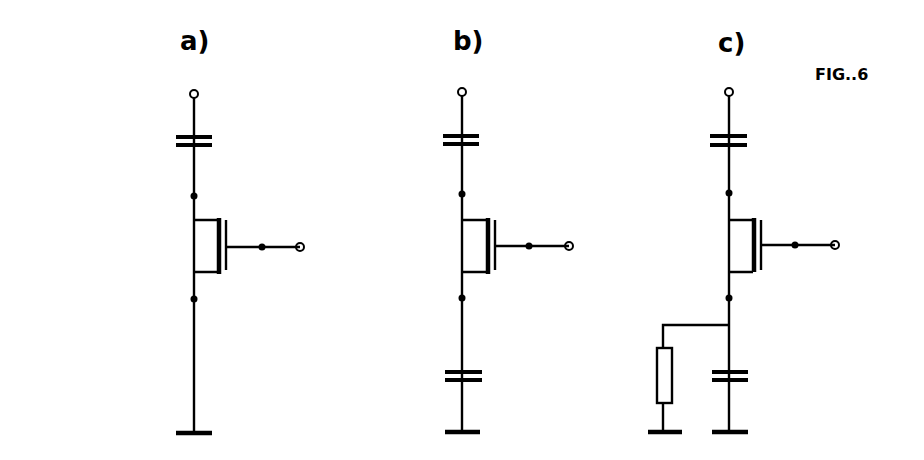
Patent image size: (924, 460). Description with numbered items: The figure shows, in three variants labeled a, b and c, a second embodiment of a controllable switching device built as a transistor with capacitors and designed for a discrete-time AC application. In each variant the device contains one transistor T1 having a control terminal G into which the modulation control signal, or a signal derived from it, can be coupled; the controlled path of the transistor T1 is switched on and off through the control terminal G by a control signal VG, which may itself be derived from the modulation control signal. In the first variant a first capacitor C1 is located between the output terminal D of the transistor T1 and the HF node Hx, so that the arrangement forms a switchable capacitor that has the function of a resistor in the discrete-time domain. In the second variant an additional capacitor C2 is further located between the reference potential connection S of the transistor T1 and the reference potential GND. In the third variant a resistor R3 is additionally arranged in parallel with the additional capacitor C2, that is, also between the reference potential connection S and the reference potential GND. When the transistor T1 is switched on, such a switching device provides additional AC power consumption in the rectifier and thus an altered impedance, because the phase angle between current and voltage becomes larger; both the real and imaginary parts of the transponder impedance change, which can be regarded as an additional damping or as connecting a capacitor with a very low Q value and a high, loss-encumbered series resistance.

The HF node Hx is at (198, 92).
The first capacitor C1 is at (202, 132).
The output terminal D is at (198, 195).
The transistor T1 is at (192, 248).
The control terminal G is at (263, 252).
The control signal VG is at (304, 236).
The reference potential connection S is at (198, 299).
The additional capacitor C2 is at (447, 365).
The resistor R3 is at (650, 366).
The reference potential GND is at (200, 430).